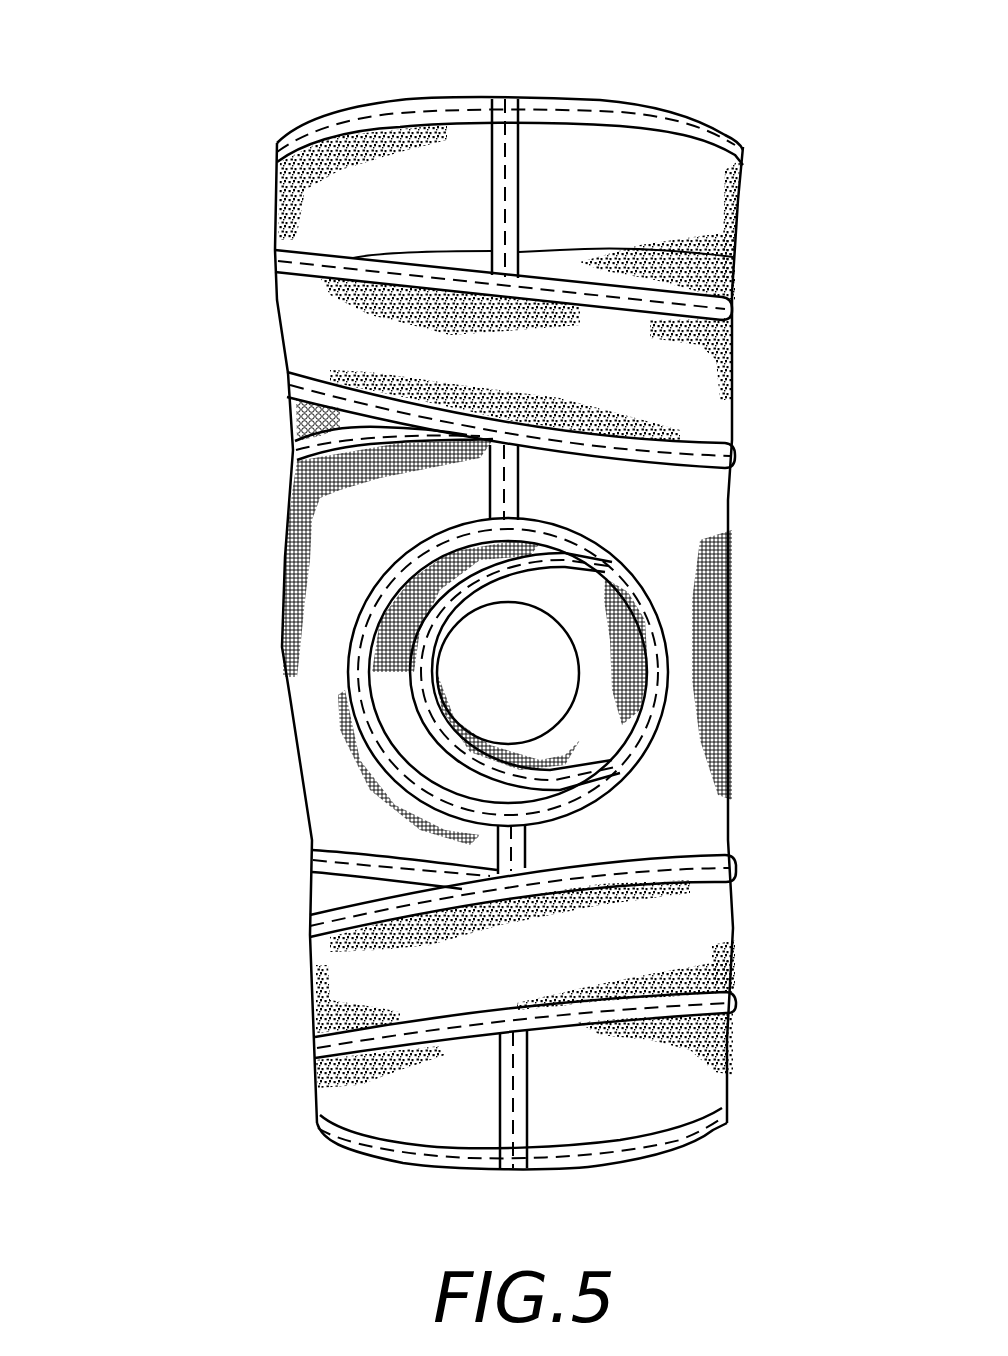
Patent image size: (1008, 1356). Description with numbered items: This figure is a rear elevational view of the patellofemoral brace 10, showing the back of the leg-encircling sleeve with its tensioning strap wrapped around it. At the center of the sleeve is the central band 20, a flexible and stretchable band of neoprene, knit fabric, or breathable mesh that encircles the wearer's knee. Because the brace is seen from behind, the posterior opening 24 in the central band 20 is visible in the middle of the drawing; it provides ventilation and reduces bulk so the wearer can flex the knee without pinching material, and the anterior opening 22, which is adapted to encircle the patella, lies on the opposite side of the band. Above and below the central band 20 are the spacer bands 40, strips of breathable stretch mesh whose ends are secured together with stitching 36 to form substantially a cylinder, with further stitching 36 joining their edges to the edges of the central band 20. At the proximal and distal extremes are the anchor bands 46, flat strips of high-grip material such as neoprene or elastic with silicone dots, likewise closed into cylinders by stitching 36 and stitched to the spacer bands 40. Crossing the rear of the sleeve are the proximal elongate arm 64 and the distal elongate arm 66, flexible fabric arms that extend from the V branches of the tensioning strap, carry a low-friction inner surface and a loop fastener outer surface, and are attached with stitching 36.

The brace 10 is at (181, 95).
The central band 20 is at (330, 553).
The anterior opening 22 is at (543, 675).
The posterior opening 24 is at (385, 680).
The stitching 36 is at (500, 162).
The spacer band 40 is at (293, 413).
The anchor band 46 is at (717, 188).
The proximal elongate arm 64 is at (707, 415).
The distal elongate arm 66 is at (693, 937).